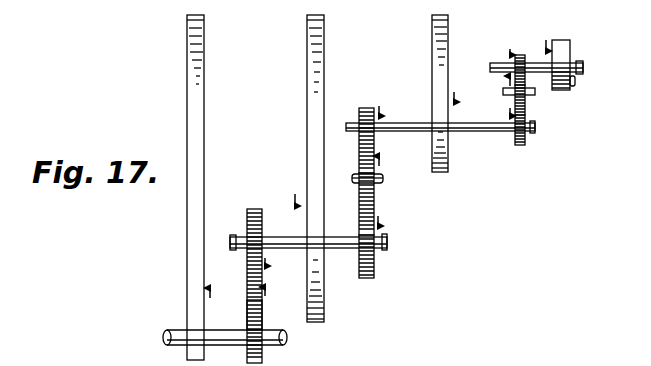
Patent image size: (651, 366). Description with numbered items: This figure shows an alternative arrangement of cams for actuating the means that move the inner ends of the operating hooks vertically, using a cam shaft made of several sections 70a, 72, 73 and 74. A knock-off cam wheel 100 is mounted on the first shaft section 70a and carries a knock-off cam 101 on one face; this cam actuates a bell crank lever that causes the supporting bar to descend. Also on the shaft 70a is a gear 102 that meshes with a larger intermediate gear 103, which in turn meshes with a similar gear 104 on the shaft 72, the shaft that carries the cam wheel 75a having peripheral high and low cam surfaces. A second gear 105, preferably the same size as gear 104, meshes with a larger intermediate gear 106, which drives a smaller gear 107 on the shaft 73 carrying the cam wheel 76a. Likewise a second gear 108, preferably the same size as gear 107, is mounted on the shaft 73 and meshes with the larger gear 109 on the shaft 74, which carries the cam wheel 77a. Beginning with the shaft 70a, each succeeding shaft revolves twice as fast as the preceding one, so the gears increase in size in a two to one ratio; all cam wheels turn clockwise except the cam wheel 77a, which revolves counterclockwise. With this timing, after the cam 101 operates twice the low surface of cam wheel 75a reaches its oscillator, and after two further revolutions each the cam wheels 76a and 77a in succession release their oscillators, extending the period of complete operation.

The cam shaft section 70a is at (583, 68).
The shaft 72 is at (505, 131).
The shaft 73 is at (387, 240).
The shaft 74 is at (163, 335).
The cam wheel 75a is at (432, 72).
The cam wheel 76a is at (307, 65).
The cam wheel 77a is at (195, 100).
The knock-off cam wheel 100 is at (560, 90).
The knock-off cam 101 is at (575, 80).
The gear 102 is at (520, 55).
The intermediate gear 103 is at (512, 92).
The gear 104 is at (527, 137).
The second gear 105 is at (370, 108).
The intermediate gear 106 is at (374, 208).
The gear 107 is at (374, 266).
The second gear 108 is at (247, 222).
The gear 109 is at (262, 310).